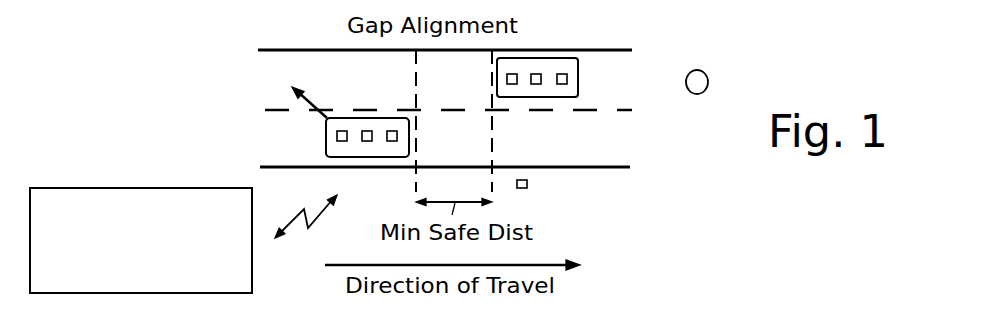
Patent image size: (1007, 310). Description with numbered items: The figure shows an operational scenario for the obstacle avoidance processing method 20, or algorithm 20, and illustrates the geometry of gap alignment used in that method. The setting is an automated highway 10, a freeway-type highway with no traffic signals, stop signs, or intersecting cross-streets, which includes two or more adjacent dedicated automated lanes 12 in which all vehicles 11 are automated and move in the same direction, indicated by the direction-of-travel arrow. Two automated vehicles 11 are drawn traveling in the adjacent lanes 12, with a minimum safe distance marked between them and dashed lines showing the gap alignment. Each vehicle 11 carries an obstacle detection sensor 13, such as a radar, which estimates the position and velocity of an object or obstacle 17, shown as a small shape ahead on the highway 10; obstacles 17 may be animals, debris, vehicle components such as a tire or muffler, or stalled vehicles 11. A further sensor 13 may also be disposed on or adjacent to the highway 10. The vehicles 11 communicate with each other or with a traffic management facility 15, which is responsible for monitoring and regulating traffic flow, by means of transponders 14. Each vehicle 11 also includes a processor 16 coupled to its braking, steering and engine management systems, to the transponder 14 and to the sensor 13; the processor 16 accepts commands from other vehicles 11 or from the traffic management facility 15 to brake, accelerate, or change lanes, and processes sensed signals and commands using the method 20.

The automated highway 10 is at (728, 222).
The automated vehicle 11 is at (326, 139).
The dedicated automated lane 12 is at (294, 65).
The obstacle detection sensor 13 is at (392, 142).
The transponder 14 is at (342, 130).
The traffic management facility 15 is at (105, 187).
The processor 16 is at (367, 130).
The obstacle 17 is at (692, 70).
The obstacle avoidance processing method 20 is at (732, 72).